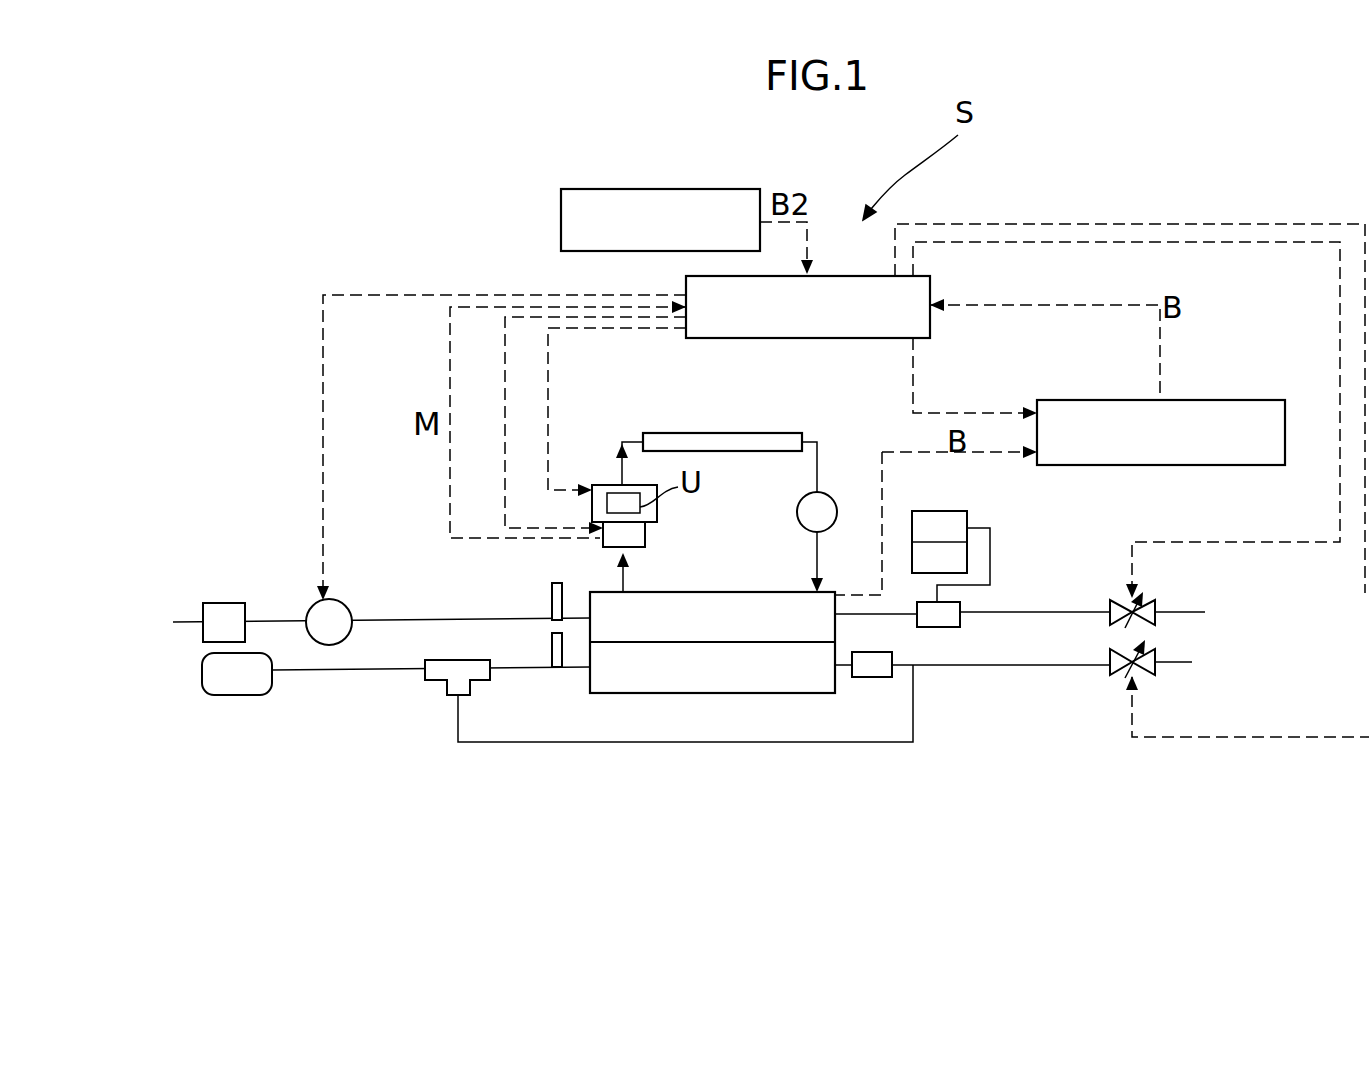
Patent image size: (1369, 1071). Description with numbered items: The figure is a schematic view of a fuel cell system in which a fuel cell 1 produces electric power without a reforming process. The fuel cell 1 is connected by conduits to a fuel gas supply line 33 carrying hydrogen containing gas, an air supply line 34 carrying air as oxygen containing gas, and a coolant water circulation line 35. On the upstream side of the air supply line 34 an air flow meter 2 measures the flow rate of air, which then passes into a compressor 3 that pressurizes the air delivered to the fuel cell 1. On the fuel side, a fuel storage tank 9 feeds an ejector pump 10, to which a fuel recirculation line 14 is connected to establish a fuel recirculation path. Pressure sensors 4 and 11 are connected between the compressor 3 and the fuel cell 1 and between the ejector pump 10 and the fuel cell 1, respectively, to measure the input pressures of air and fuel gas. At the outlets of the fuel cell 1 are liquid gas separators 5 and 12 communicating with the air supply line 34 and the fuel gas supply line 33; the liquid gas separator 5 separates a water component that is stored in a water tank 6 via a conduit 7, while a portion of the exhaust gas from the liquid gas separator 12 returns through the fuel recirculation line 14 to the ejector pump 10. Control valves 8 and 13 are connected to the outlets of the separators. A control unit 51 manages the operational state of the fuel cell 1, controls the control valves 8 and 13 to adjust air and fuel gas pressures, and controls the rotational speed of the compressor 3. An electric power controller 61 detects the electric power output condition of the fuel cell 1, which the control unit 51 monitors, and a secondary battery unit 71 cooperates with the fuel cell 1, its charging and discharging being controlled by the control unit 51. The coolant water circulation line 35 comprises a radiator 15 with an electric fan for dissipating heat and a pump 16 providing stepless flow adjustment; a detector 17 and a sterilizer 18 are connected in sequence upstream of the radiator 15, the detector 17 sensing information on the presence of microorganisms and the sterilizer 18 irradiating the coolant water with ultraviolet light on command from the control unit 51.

The fuel cell 1 is at (687, 693).
The air flow meter 2 is at (220, 603).
The compressor 3 is at (345, 602).
The pressure sensor 4 is at (552, 586).
The liquid gas separator 5 is at (955, 627).
The water tank 6 is at (937, 511).
The conduit 7 is at (992, 550).
The control valve 8 is at (1150, 597).
The fuel storage tank 9 is at (235, 695).
The ejector pump 10 is at (437, 682).
The pressure sensor 11 is at (553, 668).
The liquid gas separator 12 is at (863, 678).
The control valve 13 is at (1153, 677).
The fuel recirculation line 14 is at (483, 743).
The radiator 15 is at (668, 433).
The pump 16 is at (798, 508).
The detector 17 is at (647, 532).
The sterilizer 18 is at (590, 498).
The fuel gas supply line 33 is at (332, 673).
The air supply line 34 is at (407, 620).
The coolant water circulation line 35 is at (817, 460).
The control unit 51 is at (812, 338).
The electric power controller 61 is at (1200, 400).
The secondary battery unit 71 is at (560, 228).